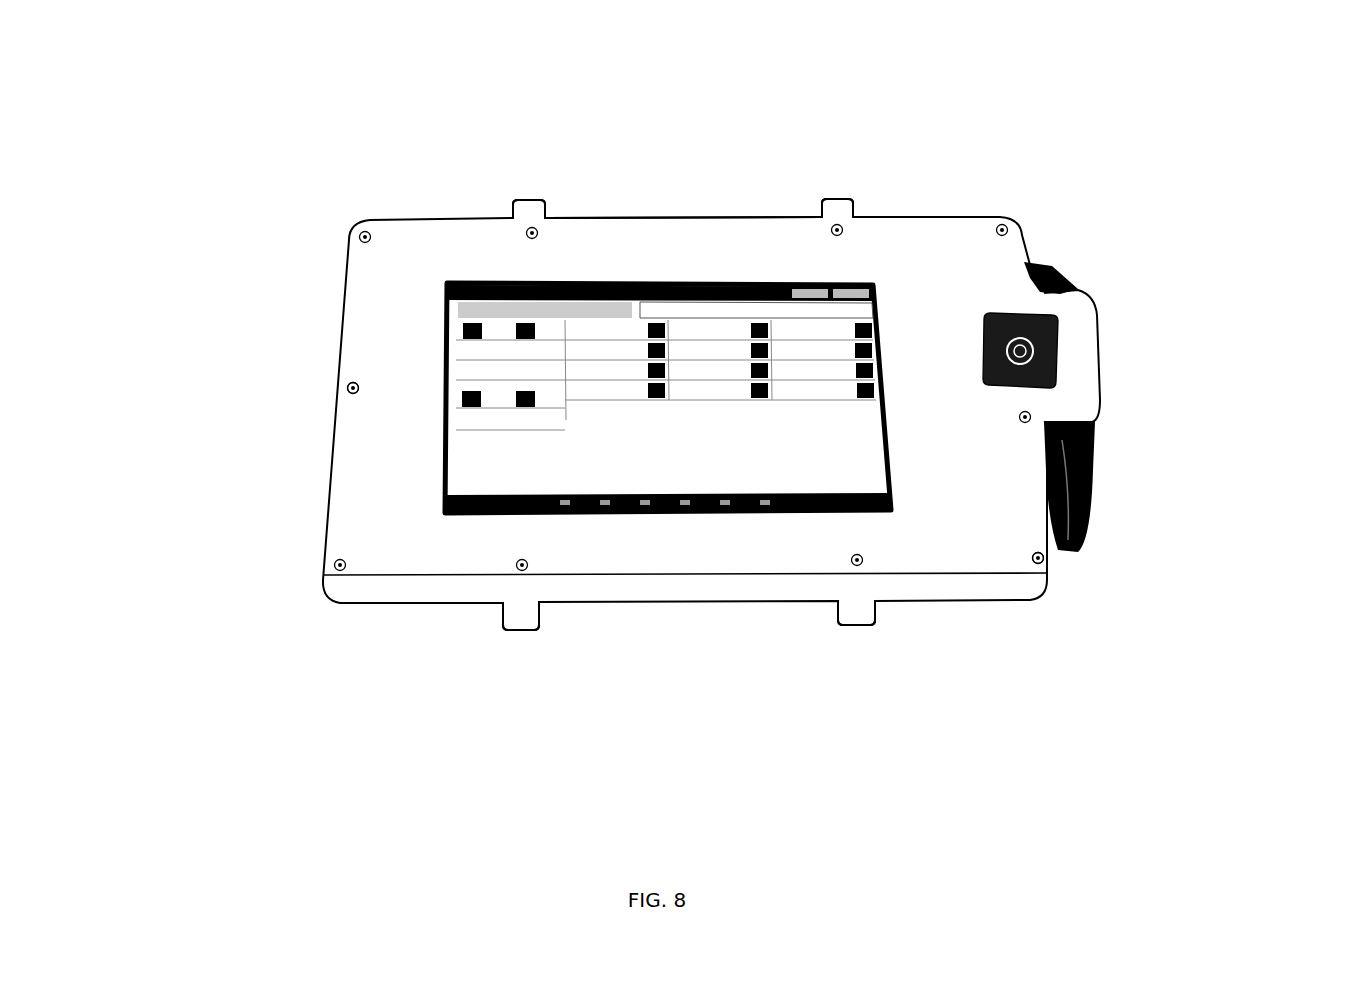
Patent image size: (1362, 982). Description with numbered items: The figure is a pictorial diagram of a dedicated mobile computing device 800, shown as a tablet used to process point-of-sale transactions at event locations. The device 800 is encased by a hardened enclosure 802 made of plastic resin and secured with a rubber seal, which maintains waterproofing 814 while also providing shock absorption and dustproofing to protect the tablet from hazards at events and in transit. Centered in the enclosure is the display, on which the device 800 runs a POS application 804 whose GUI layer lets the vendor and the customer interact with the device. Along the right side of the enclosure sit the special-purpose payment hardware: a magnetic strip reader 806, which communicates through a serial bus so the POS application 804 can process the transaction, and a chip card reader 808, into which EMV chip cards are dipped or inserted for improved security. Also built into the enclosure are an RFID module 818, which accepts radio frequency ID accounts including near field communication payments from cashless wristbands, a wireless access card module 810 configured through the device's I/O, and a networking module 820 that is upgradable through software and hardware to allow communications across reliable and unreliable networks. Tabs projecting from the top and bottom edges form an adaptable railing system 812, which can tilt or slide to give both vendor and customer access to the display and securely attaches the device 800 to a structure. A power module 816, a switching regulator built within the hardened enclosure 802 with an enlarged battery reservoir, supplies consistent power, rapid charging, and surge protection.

The dedicated mobile computing device 800 is at (155, 628).
The hardened enclosure 802 is at (345, 215).
The POS application 804 is at (659, 273).
The magnetic strip reader 806 is at (1076, 258).
The chip card reader 808 is at (1120, 357).
The wireless access card module 810 is at (978, 527).
The adaptable railing system 812 is at (540, 652).
The waterproofing 814 is at (866, 220).
The power module 816 is at (1028, 627).
The RFID module 818 is at (694, 212).
The networking module 820 is at (406, 284).